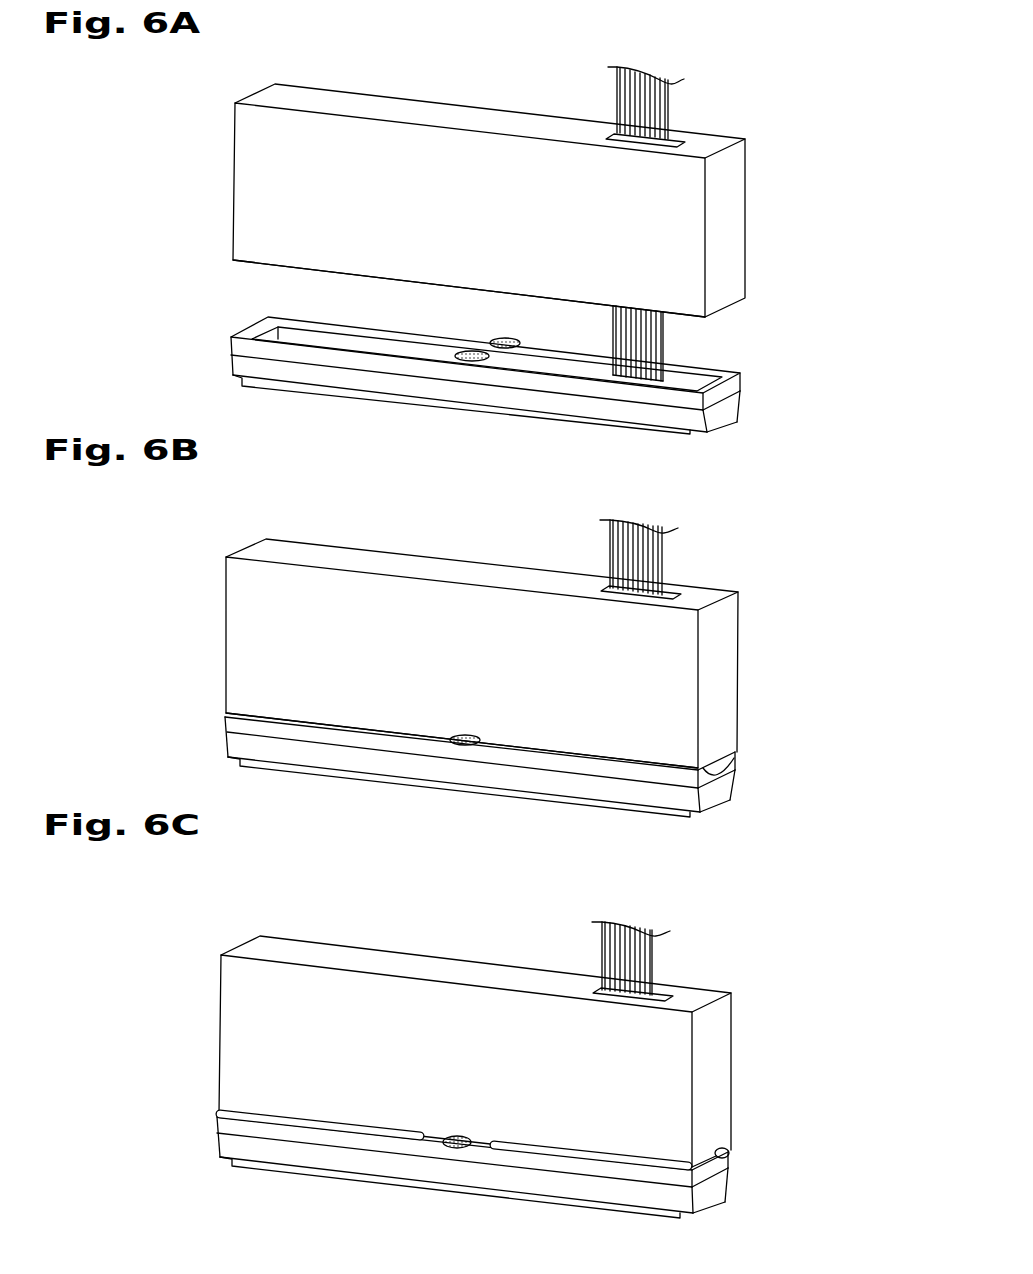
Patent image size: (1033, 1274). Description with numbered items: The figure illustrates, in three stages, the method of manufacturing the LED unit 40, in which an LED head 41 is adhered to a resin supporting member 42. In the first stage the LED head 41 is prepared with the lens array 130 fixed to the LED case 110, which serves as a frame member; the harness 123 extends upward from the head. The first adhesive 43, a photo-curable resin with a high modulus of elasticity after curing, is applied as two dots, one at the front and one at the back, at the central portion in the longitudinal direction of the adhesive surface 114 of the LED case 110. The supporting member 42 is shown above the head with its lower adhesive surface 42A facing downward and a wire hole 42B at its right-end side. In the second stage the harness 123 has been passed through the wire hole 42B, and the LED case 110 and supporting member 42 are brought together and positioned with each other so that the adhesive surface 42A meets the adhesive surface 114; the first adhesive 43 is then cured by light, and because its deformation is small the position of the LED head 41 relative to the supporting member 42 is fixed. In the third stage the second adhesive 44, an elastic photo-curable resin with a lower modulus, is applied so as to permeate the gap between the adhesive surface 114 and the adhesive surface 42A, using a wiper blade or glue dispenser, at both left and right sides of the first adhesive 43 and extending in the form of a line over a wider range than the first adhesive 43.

In FIG. 6C, the LED unit 40 is at (540, 1057).
In FIG. 6A, the LED head 41 is at (503, 398).
In FIG. 6B, the LED head 41 is at (508, 763).
In FIG. 6C, the LED head 41 is at (540, 1192).
In FIG. 6A, the supporting member 42 is at (768, 168).
In FIG. 6B, the supporting member 42 is at (761, 627).
In FIG. 6C, the supporting member 42 is at (758, 1030).
In FIG. 6A, the adhesive surface 42A is at (236, 261).
In FIG. 6B, the adhesive surface 42A is at (736, 757).
In FIG. 6A, the wire hole 42B is at (677, 141).
In FIG. 6B, the wire hole 42B is at (666, 598).
In FIG. 6C, the wire hole 42B is at (661, 992).
In FIG. 6A, the first adhesive 43 is at (501, 339).
In FIG. 6B, the first adhesive 43 is at (460, 746).
In FIG. 6C, the first adhesive 43 is at (453, 1149).
In FIG. 6C, the second adhesive 44 is at (372, 1137).
In FIG. 6A, the LED case 110 is at (744, 403).
In FIG. 6B, the LED case 110 is at (740, 785).
In FIG. 6C, the LED case 110 is at (738, 1185).
In FIG. 6A, the adhesive surface 114 is at (249, 335).
In FIG. 6B, the adhesive surface 114 is at (236, 717).
In FIG. 6A, the harness 123 is at (666, 343).
In FIG. 6B, the harness 123 is at (662, 553).
In FIG. 6C, the harness 123 is at (653, 950).
In FIG. 6A, the lens array 130 is at (633, 433).
In FIG. 6B, the lens array 130 is at (633, 816).
In FIG. 6C, the lens array 130 is at (622, 1217).